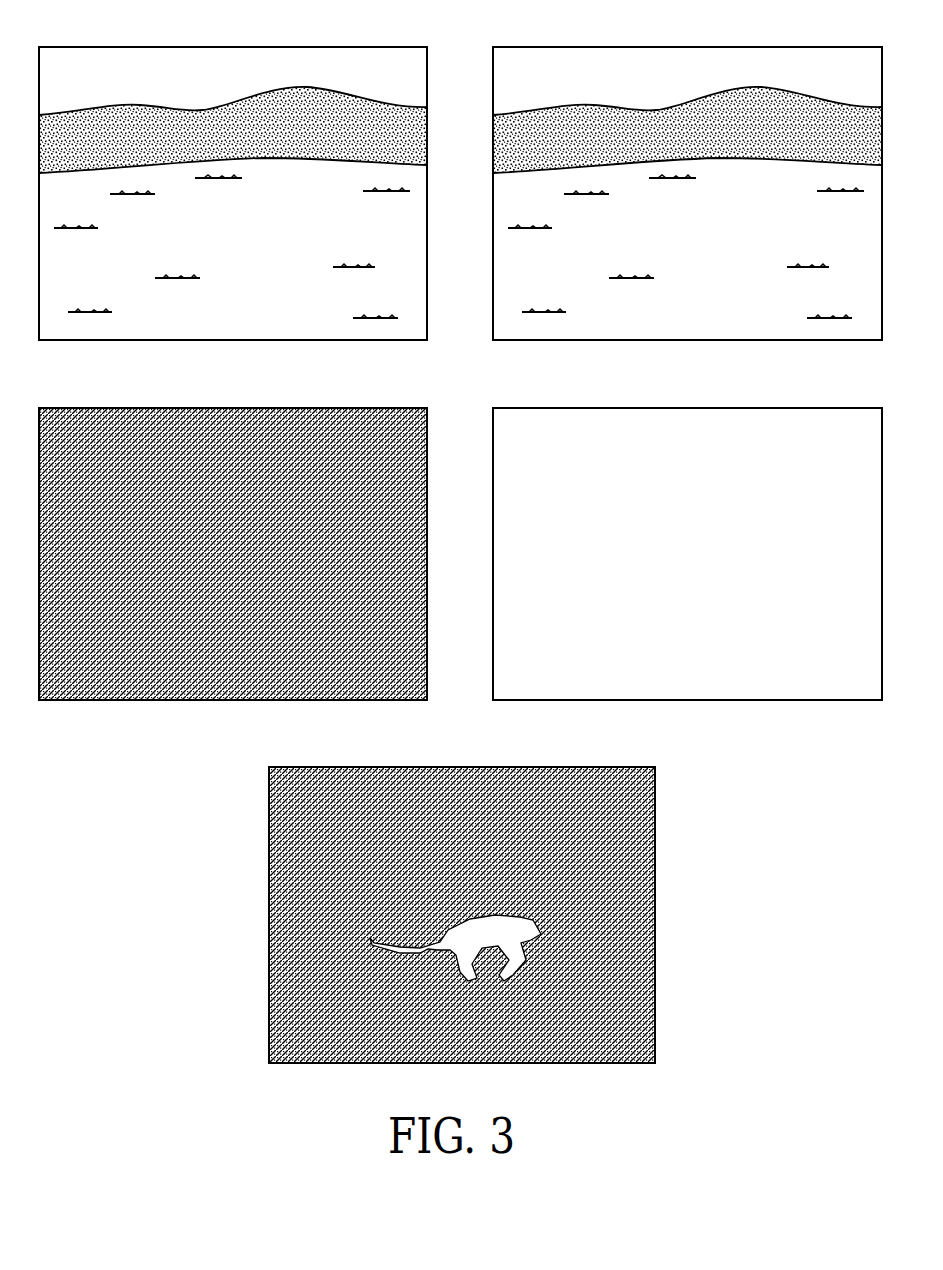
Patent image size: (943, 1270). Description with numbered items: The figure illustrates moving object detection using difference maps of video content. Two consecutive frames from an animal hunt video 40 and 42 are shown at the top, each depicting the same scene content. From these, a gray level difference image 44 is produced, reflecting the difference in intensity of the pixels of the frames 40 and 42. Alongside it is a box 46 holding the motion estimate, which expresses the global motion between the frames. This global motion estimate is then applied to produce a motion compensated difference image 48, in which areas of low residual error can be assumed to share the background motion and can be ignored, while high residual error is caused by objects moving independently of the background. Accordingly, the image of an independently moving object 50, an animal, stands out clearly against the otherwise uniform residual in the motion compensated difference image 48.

The first consecutive frame 40 is at (312, 47).
The second consecutive frame 42 is at (767, 47).
The gray level difference image 44 is at (312, 408).
The motion estimate 46 is at (767, 408).
The motion compensated difference image 48 is at (542, 767).
The independently moving object 50 is at (530, 918).